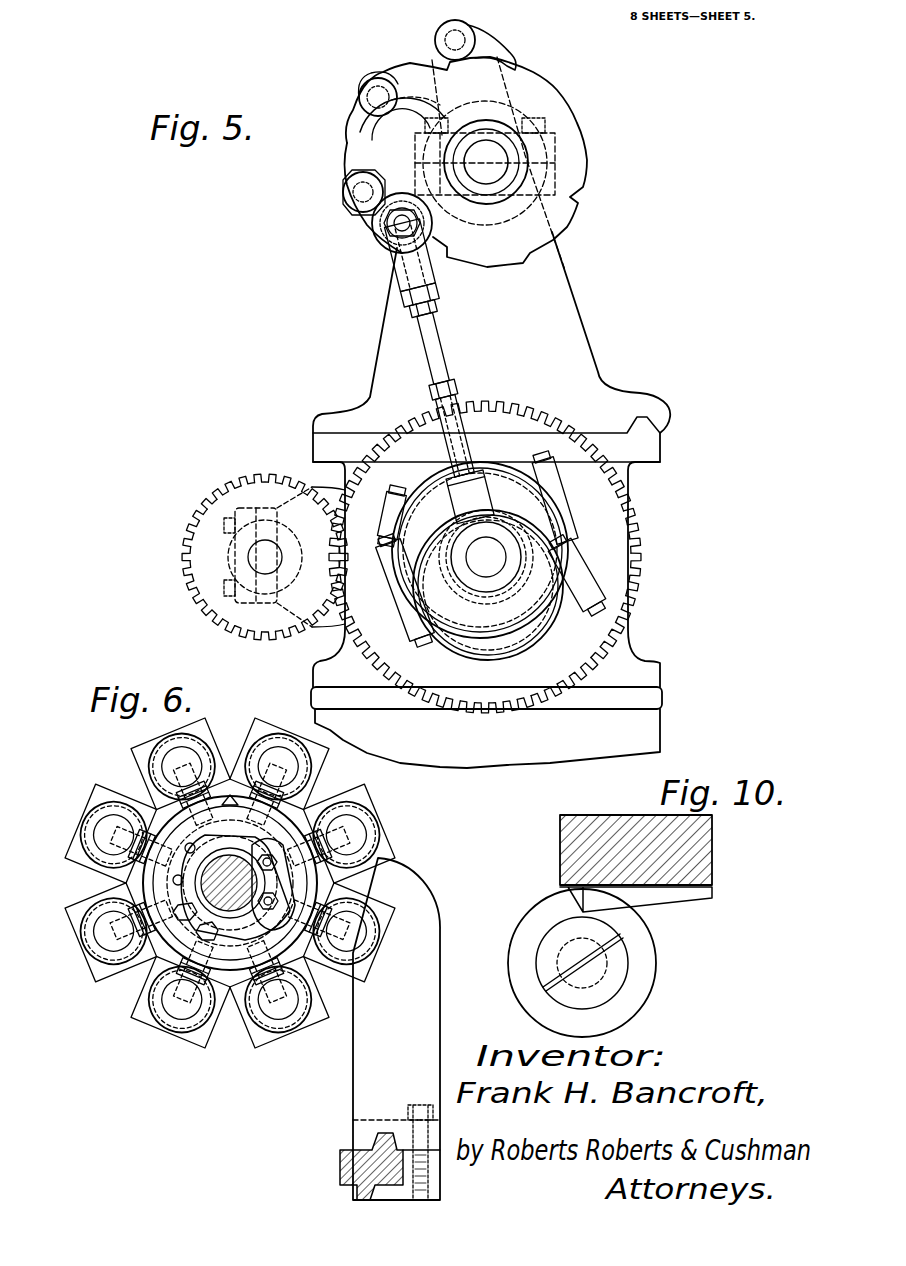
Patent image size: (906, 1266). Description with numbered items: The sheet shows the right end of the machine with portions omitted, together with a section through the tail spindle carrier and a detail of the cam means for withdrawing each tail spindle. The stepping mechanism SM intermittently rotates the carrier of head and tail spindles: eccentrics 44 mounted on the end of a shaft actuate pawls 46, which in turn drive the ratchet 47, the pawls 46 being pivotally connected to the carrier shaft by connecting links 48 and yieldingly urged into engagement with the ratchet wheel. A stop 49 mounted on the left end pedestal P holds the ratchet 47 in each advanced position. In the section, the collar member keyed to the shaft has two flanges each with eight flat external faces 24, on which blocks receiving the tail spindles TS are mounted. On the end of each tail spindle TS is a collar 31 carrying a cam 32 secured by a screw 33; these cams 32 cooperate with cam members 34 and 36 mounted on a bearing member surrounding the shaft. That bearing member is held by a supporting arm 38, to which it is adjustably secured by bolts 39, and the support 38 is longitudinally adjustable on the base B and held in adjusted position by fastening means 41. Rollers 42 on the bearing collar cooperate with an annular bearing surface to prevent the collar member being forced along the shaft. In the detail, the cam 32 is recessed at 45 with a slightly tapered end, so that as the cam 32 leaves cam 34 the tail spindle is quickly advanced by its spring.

In FIG. 5, the left end pedestal P is at (490, 500).
In FIG. 5, the stepping mechanism SM is at (601, 247).
In FIG. 5, the screw 33 is at (486, 162).
In FIG. 6, the screw 33 is at (222, 1060).
In FIG. 10, the screw 33 is at (615, 980).
In FIG. 5, the eccentrics 44 is at (545, 513).
In FIG. 5, the pawls 46 is at (405, 70).
In FIG. 5, the ratchet 47 is at (548, 98).
In FIG. 5, the connecting links 48 is at (460, 216).
In FIG. 5, the stop 49 is at (493, 40).
In FIG. 6, the flat external faces 24 is at (272, 1055).
In FIG. 6, the collar 31 is at (178, 1030).
In FIG. 6, the cam 32 is at (165, 950).
In FIG. 10, the cam 32 is at (522, 948).
In FIG. 6, the cam member 34 is at (150, 968).
In FIG. 10, the cam member 34 is at (560, 862).
In FIG. 6, the cam member 36 is at (150, 812).
In FIG. 6, the supporting arm 38 is at (410, 905).
In FIG. 6, the bolts 39 is at (318, 878).
In FIG. 6, the fastening means 41 is at (412, 1105).
In FIG. 6, the rollers 42 is at (112, 883).
In FIG. 6, the recess 45 is at (230, 805).
In FIG. 10, the recess 45 is at (630, 905).
In FIG. 6, the tail spindles TS is at (85, 832).
In FIG. 6, the base B is at (340, 1165).